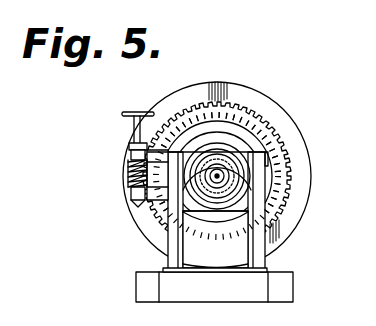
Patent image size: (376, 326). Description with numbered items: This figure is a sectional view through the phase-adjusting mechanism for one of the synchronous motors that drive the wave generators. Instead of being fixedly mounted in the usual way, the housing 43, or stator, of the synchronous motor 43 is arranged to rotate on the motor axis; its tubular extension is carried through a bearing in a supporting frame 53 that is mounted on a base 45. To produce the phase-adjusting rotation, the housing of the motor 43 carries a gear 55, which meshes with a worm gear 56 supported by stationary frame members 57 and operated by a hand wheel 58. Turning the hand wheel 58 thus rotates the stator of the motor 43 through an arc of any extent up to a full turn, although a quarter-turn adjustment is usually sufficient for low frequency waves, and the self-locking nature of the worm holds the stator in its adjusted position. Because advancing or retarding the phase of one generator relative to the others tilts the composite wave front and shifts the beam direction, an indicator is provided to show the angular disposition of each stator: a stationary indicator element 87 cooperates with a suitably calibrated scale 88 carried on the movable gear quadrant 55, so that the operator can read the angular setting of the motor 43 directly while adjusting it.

The synchronous motor housing 43 is at (246, 142).
The base 45 is at (288, 288).
The supporting frame 53 is at (272, 167).
The gear 55 is at (157, 122).
The worm gear 56 is at (130, 177).
The stationary frame members 57 is at (134, 146).
The hand wheel 58 is at (123, 113).
The stationary indicator element 87 is at (178, 135).
The calibrated scale 88 is at (128, 166).